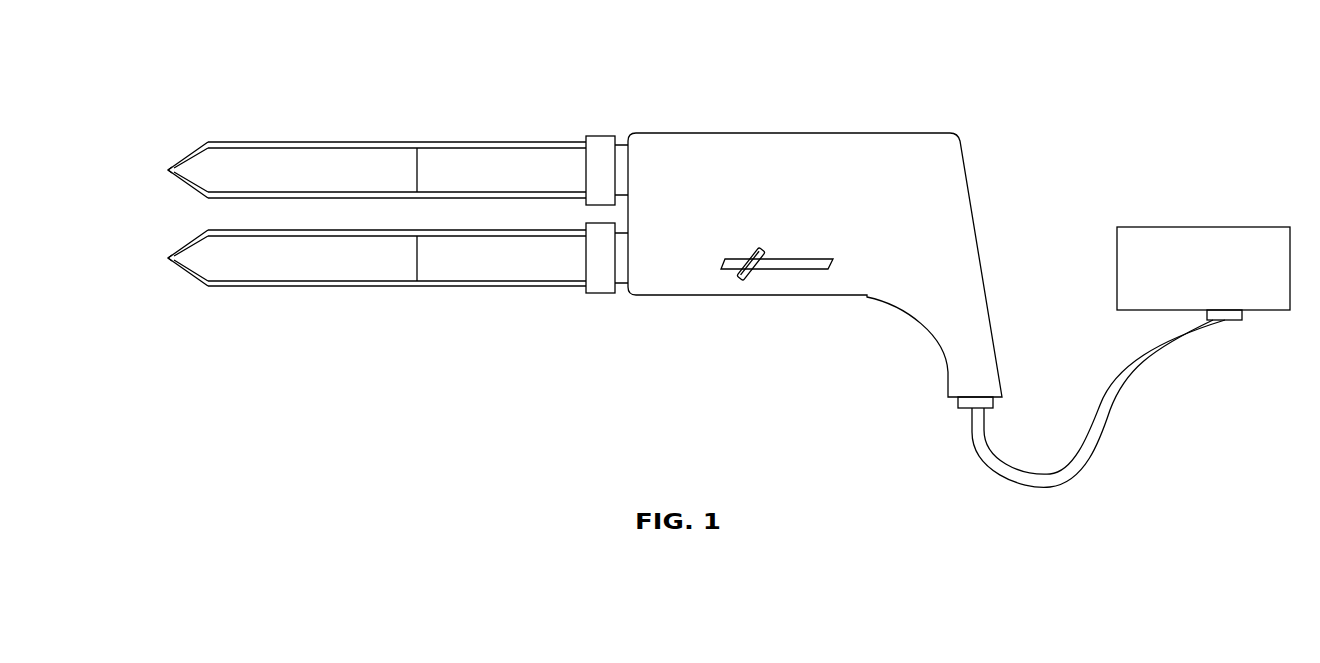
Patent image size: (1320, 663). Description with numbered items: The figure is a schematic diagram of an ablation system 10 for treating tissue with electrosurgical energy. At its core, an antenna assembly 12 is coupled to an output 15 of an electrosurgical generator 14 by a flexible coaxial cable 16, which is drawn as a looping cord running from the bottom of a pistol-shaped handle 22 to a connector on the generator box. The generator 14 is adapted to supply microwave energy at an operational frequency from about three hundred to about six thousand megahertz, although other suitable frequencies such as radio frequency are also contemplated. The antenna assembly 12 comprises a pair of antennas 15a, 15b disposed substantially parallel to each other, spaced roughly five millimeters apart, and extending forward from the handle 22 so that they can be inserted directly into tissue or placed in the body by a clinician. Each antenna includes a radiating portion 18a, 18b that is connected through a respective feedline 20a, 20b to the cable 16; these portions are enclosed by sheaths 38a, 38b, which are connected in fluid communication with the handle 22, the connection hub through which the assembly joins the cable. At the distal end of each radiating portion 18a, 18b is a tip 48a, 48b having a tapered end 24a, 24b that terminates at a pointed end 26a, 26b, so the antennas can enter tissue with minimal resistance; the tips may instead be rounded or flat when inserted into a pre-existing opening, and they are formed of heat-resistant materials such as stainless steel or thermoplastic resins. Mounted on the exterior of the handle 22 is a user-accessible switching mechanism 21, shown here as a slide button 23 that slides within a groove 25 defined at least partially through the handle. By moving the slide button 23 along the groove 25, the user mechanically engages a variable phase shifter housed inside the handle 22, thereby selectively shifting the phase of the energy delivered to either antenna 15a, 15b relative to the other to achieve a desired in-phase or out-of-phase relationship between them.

The ablation system 10 is at (832, 83).
The antenna assembly 12 is at (575, 101).
The electrosurgical generator 14 is at (1203, 268).
The output 15 is at (1243, 316).
The antenna 15a is at (249, 138).
The antenna 15b is at (259, 291).
The flexible coaxial cable 16 is at (1126, 426).
The radiating portion 18a is at (358, 162).
The radiating portion 18b is at (365, 265).
The feedline 20a is at (458, 162).
The feedline 20b is at (465, 265).
The switching mechanism 21 is at (795, 248).
The handle 22 is at (815, 270).
The slide button 23 is at (742, 280).
The tapered end 24a is at (187, 155).
The tapered end 24b is at (187, 244).
The groove 25 is at (786, 270).
The pointed end 26a is at (168, 170).
The pointed end 26b is at (168, 258).
The sheath 38a is at (280, 142).
The sheath 38b is at (288, 286).
The tip 48a is at (188, 184).
The tip 48b is at (188, 272).